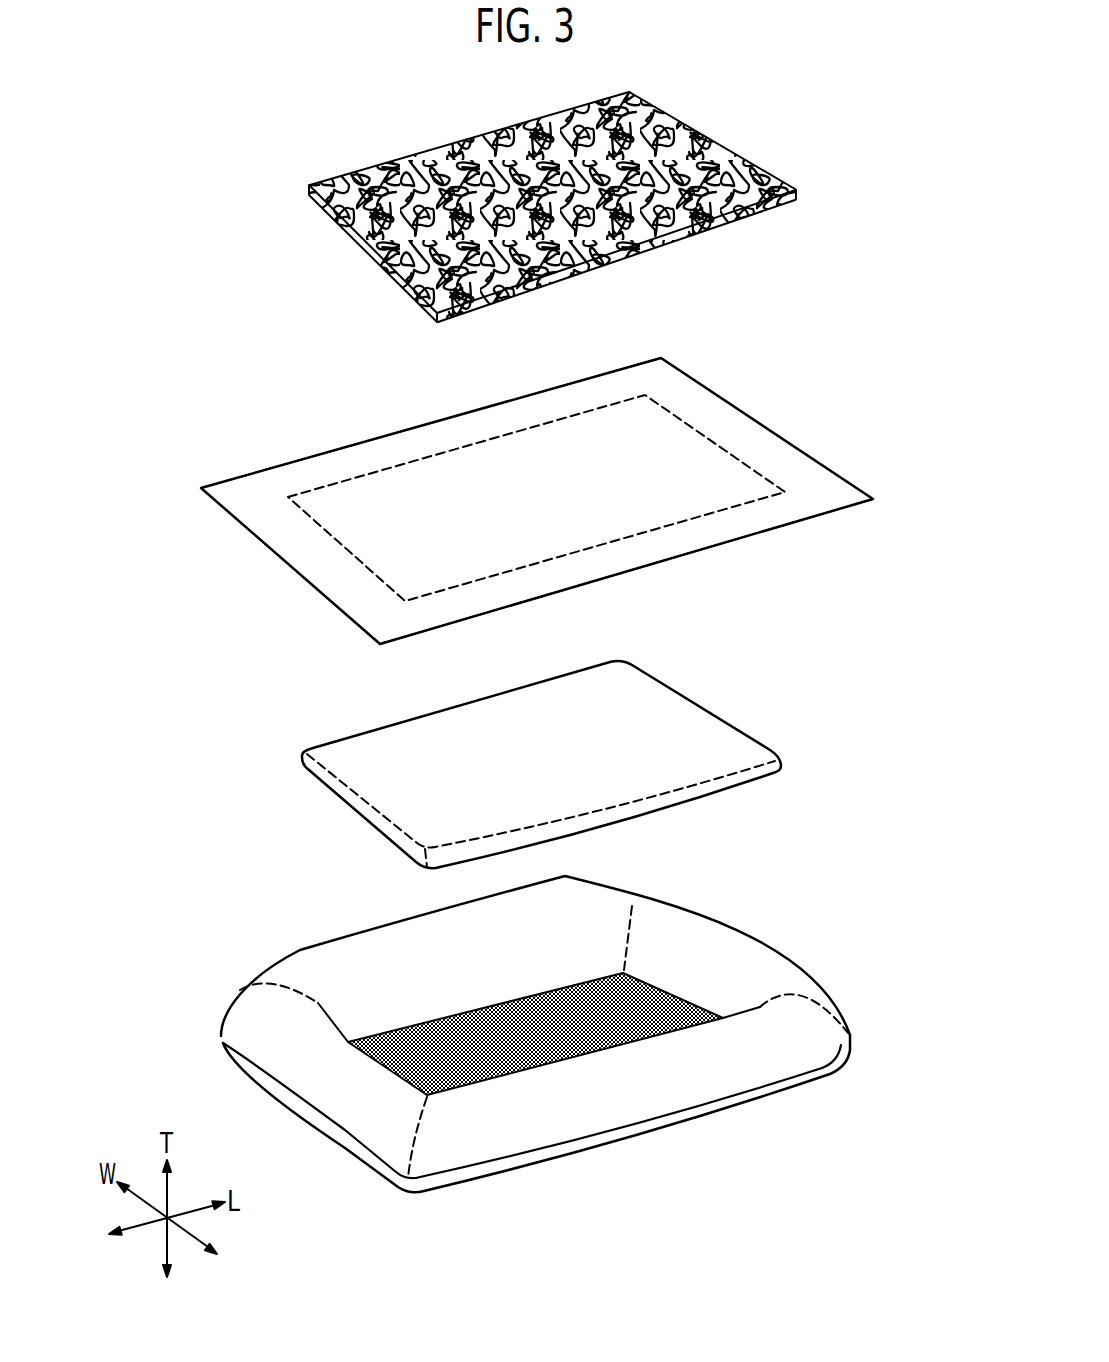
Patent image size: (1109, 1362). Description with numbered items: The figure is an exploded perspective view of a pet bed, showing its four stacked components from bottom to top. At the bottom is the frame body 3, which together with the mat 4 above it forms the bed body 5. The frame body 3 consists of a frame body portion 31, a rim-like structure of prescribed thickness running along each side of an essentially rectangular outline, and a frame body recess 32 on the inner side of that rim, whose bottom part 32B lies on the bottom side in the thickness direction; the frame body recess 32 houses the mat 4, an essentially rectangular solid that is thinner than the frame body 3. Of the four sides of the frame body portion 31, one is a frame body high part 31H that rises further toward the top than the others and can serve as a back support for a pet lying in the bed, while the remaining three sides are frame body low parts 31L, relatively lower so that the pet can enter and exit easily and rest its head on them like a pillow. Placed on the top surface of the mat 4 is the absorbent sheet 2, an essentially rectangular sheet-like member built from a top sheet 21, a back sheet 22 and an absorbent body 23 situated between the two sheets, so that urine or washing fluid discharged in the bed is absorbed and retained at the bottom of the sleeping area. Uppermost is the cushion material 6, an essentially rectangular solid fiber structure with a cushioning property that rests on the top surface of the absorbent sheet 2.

The absorbent sheet 2 is at (577, 501).
The frame body 3 is at (540, 1010).
The mat 4 is at (792, 759).
The bed body 5 is at (540, 926).
The cushion material 6 is at (768, 126).
The top sheet 21 is at (763, 448).
The back sheet 22 is at (918, 405).
The absorbent body 23 is at (760, 480).
The frame body portion 31 is at (672, 922).
The frame body high part 31H is at (330, 950).
The frame body low part 31L is at (253, 1015).
The frame body recess 32 is at (700, 983).
The bottom part 32B is at (698, 1013).